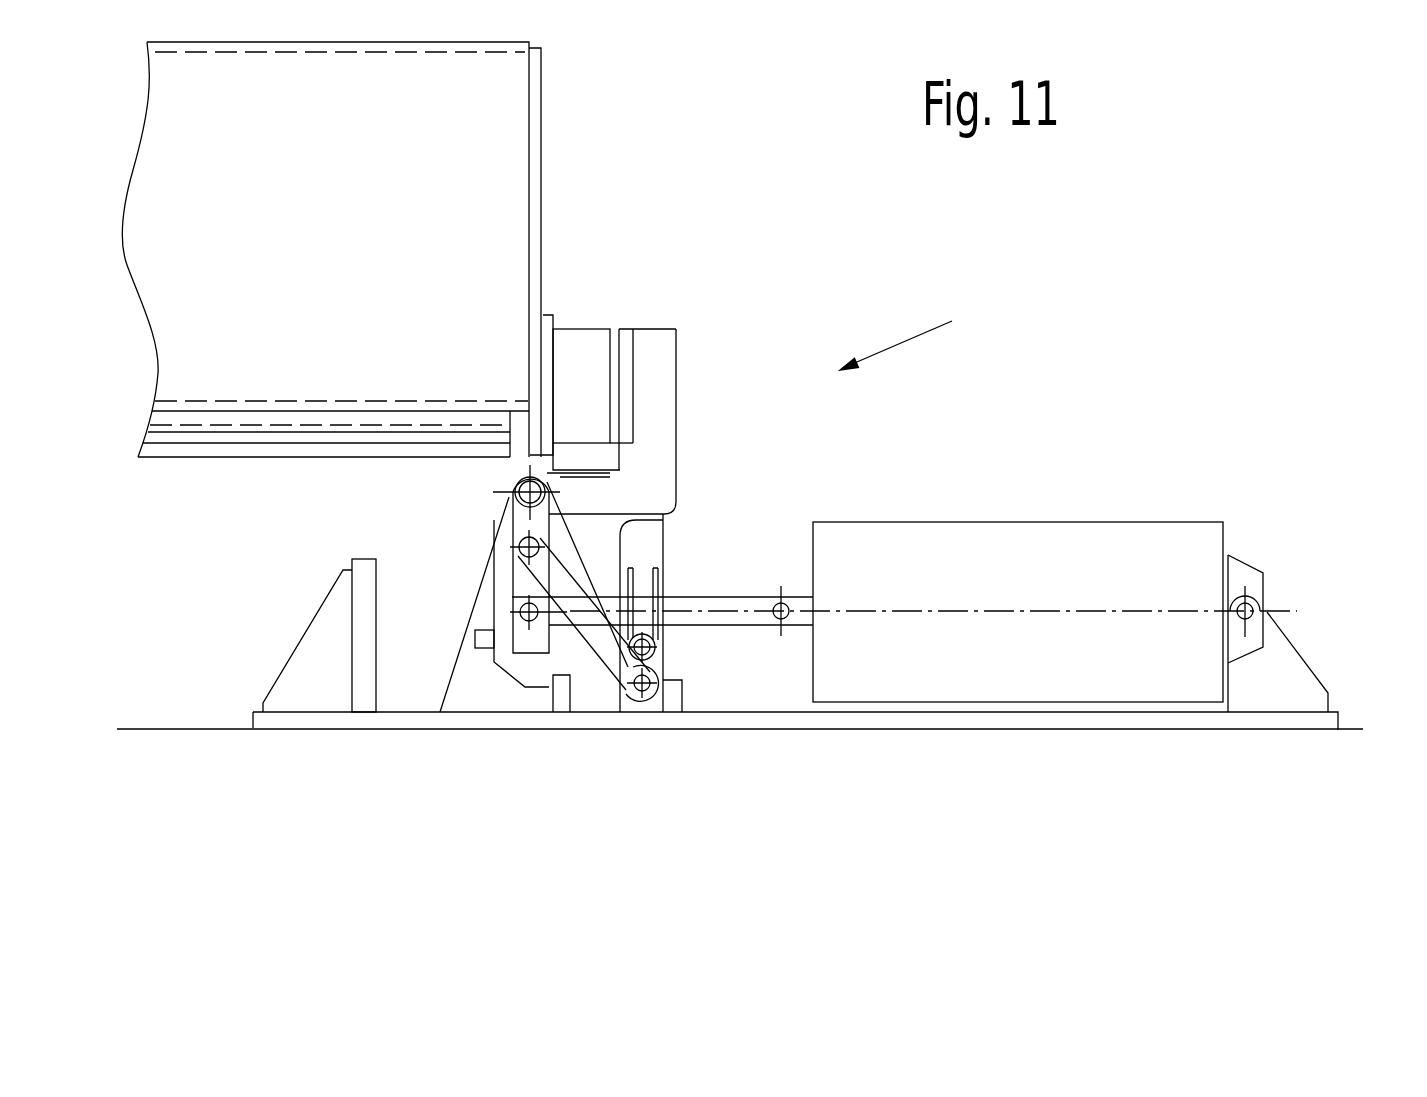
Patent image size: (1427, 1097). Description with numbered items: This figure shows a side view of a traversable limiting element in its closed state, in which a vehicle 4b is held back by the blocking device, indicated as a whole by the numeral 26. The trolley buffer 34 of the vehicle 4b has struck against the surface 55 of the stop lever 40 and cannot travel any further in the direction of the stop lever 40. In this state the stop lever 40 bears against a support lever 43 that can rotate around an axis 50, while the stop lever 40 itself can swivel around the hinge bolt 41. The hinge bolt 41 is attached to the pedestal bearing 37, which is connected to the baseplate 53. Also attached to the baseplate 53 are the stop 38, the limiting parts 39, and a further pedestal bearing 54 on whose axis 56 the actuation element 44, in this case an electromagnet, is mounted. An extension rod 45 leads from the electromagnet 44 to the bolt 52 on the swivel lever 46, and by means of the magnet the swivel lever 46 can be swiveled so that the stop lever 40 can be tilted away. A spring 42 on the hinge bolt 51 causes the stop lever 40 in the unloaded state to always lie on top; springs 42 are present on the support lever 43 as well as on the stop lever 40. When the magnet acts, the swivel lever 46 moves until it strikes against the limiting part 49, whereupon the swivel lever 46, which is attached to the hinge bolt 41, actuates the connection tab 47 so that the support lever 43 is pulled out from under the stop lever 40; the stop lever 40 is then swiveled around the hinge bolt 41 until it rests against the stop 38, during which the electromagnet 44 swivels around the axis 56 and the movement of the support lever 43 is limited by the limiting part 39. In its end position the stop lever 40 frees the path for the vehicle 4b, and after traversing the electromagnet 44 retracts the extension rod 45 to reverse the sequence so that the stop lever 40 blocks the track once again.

The vehicle 4b is at (476, 182).
The locking device 26 is at (927, 323).
The trolley buffer 34 is at (562, 336).
The pedestal bearing 37 is at (463, 702).
The stop 38 is at (360, 586).
The limiting part 39 is at (678, 700).
The stop lever 40 is at (657, 362).
The hinge bolt 41 is at (507, 483).
The spring 42 is at (510, 523).
The support lever 43 is at (647, 532).
The actuation element 44 is at (1003, 581).
The extension rod 45 is at (693, 602).
The swivel lever 46 is at (527, 640).
The connection tab 47 is at (582, 635).
The limiting part 49 is at (478, 637).
The axis 50 is at (655, 648).
The hinge bolt 51 is at (545, 547).
The bolt 52 is at (518, 612).
The baseplate 53 is at (1320, 720).
The pedestal bearing 54 is at (1275, 652).
The surface 55 is at (622, 337).
The axis 56 is at (1263, 597).